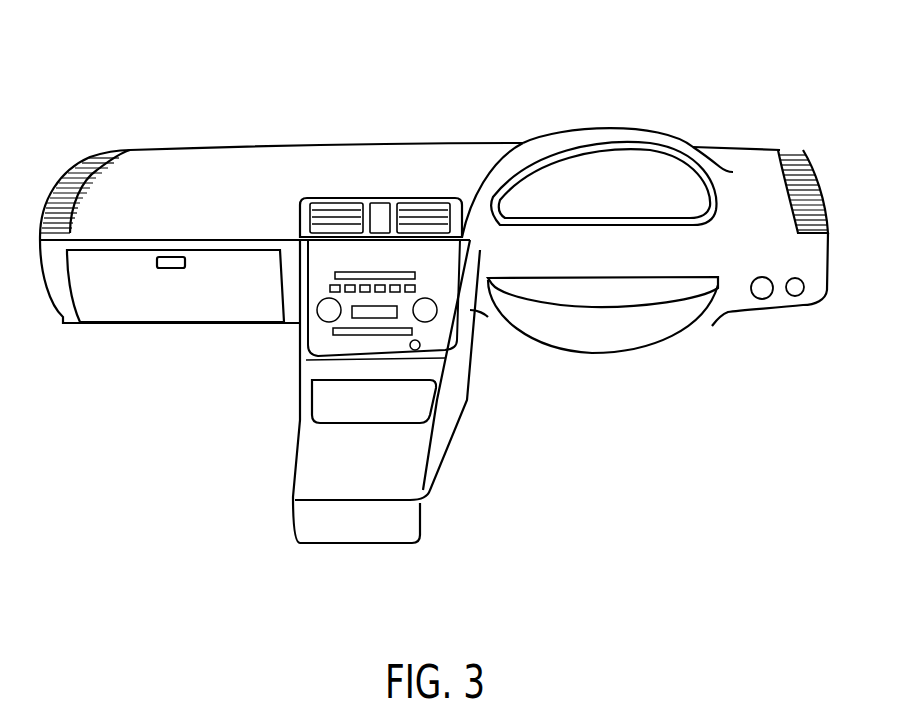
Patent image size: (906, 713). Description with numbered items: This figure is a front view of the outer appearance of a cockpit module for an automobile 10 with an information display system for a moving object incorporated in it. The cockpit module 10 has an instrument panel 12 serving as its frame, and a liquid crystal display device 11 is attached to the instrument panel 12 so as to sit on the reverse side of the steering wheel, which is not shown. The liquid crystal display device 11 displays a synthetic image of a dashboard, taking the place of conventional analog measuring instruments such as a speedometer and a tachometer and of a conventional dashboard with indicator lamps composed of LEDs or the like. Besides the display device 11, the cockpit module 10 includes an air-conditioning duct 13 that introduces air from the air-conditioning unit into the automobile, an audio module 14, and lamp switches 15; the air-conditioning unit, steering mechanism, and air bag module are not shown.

The cockpit module for an automobile 10 is at (722, 87).
The liquid crystal display device 11 is at (590, 173).
The instrument panel 12 is at (222, 165).
The air-conditioning duct 13 is at (90, 160).
The audio module 14 is at (313, 283).
The lamp switches 15 is at (797, 295).